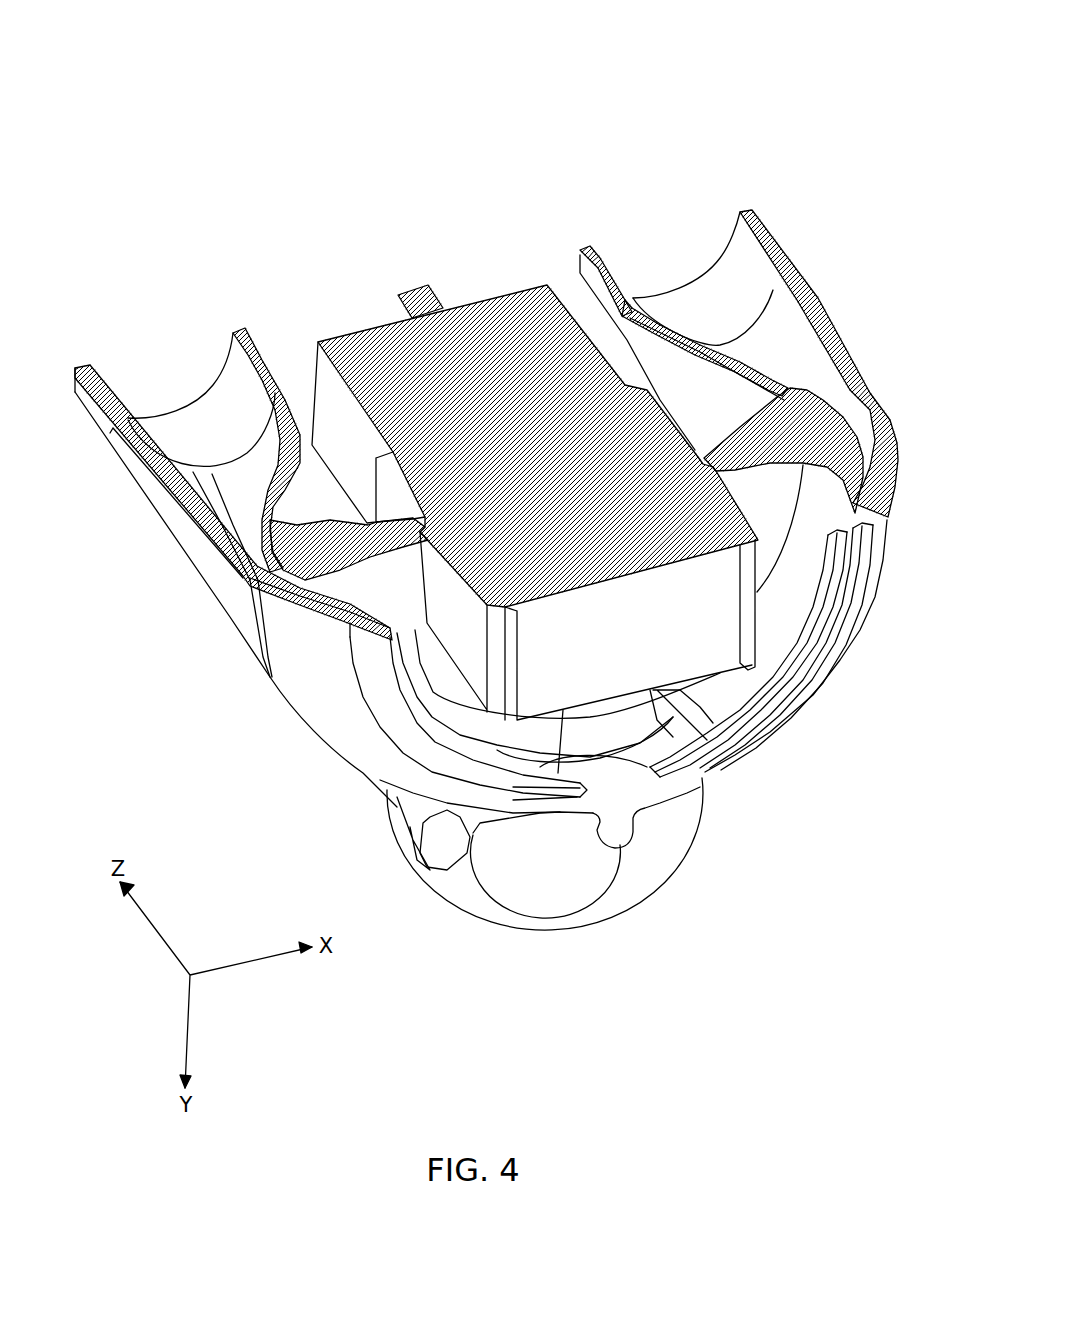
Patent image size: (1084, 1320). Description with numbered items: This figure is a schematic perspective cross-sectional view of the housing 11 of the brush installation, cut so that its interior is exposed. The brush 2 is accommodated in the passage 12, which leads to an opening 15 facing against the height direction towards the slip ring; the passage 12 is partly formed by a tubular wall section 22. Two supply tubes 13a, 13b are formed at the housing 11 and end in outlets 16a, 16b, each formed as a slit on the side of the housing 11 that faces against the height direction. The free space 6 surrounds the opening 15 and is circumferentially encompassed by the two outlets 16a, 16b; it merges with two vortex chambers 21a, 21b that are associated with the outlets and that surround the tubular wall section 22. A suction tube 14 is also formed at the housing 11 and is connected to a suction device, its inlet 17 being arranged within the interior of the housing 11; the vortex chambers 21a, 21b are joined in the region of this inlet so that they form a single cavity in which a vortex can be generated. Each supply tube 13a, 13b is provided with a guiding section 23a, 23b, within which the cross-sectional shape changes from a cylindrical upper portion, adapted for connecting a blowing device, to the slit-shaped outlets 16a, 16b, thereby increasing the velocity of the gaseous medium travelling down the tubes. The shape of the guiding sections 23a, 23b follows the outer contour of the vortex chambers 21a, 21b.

The housing 11 is at (772, 108).
The brush 2 is at (377, 357).
The free space 6 is at (783, 611).
The passage 12 is at (383, 495).
The supply tube 13a is at (197, 418).
The supply tube 13b is at (700, 297).
The suction tube 14 is at (467, 893).
The opening 15 is at (443, 743).
The outlet 16a is at (438, 768).
The outlet 16b is at (800, 662).
The inlet 17 is at (623, 740).
The vortex chamber 21a is at (390, 595).
The vortex chamber 21b is at (767, 497).
The tubular wall section 22 is at (492, 653).
The guiding section 23a is at (310, 594).
The guiding section 23b is at (870, 488).